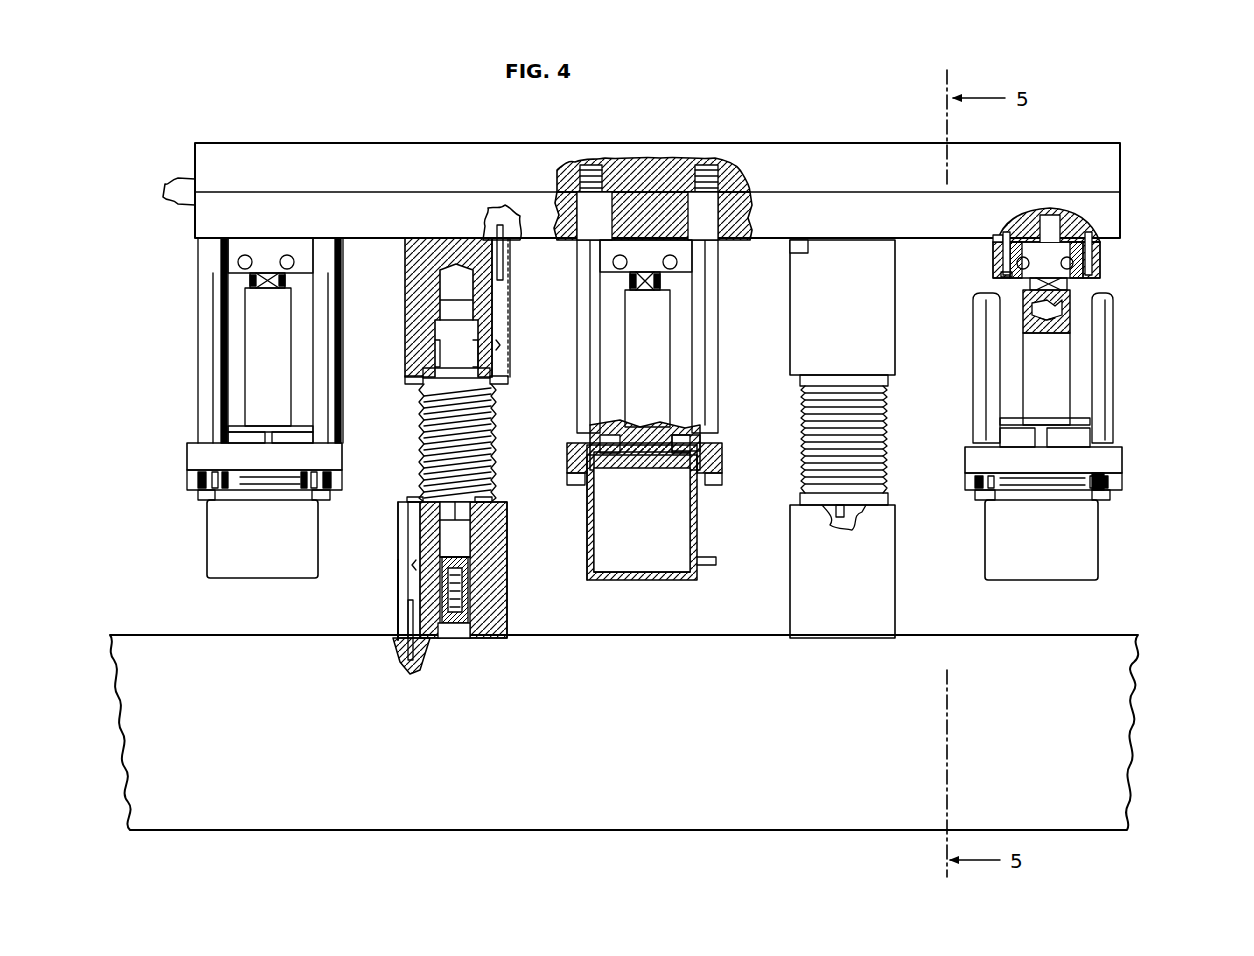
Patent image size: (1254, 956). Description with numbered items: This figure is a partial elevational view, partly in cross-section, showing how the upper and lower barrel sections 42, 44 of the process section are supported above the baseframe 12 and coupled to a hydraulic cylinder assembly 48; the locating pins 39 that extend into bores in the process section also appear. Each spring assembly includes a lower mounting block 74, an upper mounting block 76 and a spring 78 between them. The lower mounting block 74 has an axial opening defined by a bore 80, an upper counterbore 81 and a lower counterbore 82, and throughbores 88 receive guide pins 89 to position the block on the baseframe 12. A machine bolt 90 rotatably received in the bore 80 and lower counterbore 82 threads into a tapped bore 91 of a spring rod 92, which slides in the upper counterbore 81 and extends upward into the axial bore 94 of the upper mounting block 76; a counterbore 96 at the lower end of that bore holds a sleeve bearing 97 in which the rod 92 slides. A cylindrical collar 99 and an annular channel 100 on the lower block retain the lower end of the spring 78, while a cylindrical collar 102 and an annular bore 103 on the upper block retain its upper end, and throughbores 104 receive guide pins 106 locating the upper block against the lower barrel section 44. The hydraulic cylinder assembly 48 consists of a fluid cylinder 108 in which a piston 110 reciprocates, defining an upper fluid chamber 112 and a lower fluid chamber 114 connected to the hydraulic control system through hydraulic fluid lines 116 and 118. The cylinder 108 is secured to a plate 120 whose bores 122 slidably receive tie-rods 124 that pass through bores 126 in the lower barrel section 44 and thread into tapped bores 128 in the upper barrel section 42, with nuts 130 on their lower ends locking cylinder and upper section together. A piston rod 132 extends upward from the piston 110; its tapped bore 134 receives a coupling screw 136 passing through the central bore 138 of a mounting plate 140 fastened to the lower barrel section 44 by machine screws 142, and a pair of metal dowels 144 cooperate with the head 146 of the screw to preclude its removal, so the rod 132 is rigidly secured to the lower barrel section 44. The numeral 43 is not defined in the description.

The baseframe 12 is at (605, 774).
The locating pins 39 is at (186, 178).
The upper barrel section 42 is at (390, 188).
The cylinder assembly 43 is at (1122, 350).
The lower barrel section 44 is at (446, 227).
The hydraulic cylinder assembly 48 is at (715, 505).
The lower mounting block 74 is at (488, 558).
The upper mounting block 76 is at (406, 272).
The spring 78 is at (492, 428).
The bore 80 is at (462, 598).
The upper counterbore 81 is at (480, 534).
The lower counterbore 82 is at (452, 648).
The throughbores 88 is at (410, 580).
The guide pins 89 is at (410, 622).
The machine bolt 90 is at (470, 630).
The tapped bore 91 is at (482, 585).
The spring rod 92 is at (500, 498).
The axial bore 94 is at (445, 297).
The counterbore 96 is at (440, 355).
The sleeve bearing 97 is at (508, 378).
The cylindrical collar 99 is at (412, 494).
The annular channel 100 is at (490, 454).
The cylindrical collar 102 is at (412, 386).
The annular bore 103 is at (492, 386).
The throughbores 104 is at (503, 345).
The guide pins 106 is at (505, 262).
The fluid cylinder 108 is at (698, 533).
The piston 110 is at (615, 510).
The upper fluid chamber 112 is at (690, 440).
The lower fluid chamber 114 is at (655, 580).
The hydraulic fluid line 116 is at (700, 445).
The hydraulic fluid line 118 is at (720, 565).
The plate 120 is at (720, 462).
The bores 122 is at (1112, 485).
The tie-rods 124 is at (583, 330).
The bores 126 is at (748, 218).
The tapped bores 128 is at (735, 180).
The nuts 130 is at (575, 485).
The piston rod 132 is at (664, 366).
The tapped bore 134 is at (1060, 312).
The coupling screw 136 is at (1046, 320).
The central bore 138 is at (1073, 228).
The mounting plate 140 is at (1100, 258).
The machine screws 142 is at (1100, 250).
The metal dowels 144 is at (677, 265).
The head 146 is at (1045, 235).